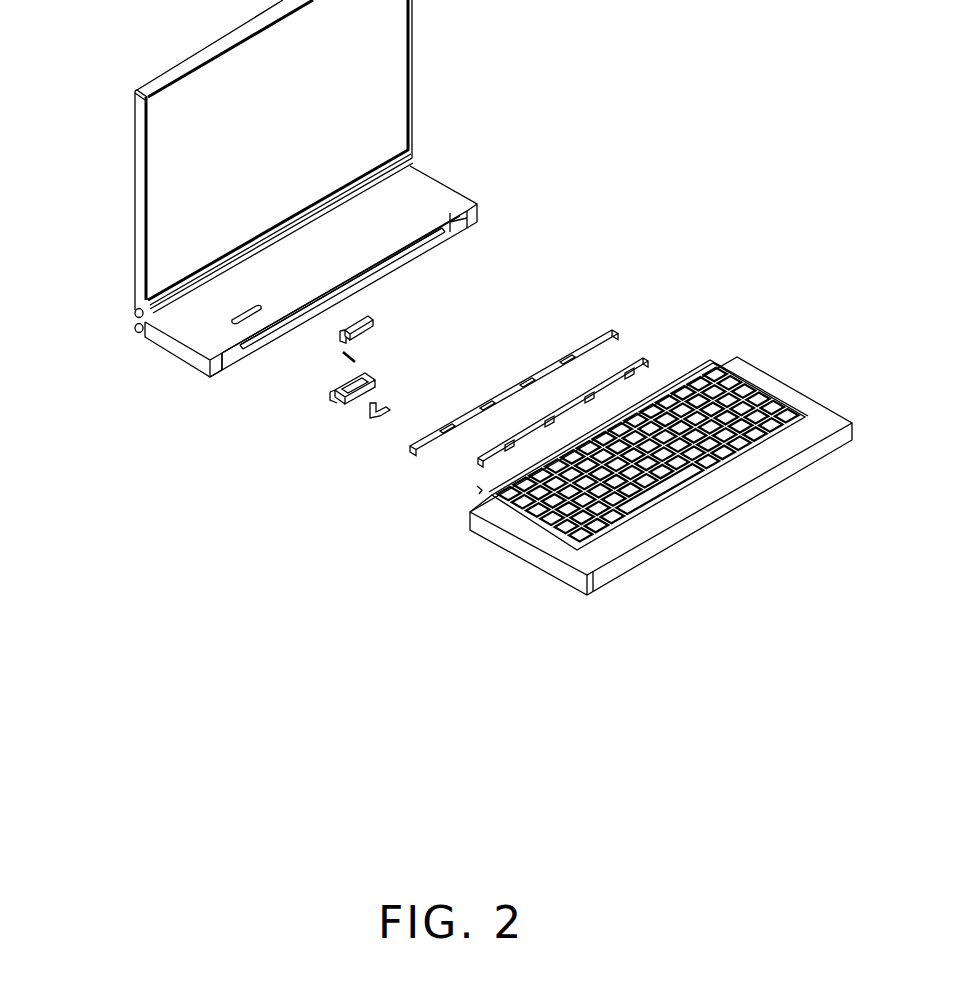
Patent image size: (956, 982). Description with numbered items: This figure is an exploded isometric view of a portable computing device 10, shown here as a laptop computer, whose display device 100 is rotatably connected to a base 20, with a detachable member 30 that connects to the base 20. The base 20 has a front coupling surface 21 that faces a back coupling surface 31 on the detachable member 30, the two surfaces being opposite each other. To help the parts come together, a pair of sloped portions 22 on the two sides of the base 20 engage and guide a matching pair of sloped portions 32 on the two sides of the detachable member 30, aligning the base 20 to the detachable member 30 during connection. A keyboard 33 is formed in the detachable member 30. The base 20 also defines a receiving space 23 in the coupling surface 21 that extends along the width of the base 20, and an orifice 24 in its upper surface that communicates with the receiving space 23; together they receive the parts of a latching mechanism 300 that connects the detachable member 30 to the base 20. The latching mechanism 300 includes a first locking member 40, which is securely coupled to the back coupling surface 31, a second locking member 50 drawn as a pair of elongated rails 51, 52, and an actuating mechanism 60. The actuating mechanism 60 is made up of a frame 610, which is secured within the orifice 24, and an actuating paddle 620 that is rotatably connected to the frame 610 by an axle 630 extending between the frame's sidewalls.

The portable computing device 10 is at (590, 83).
The display device 100 is at (163, 219).
The base 20 is at (428, 197).
The front coupling surface 21 is at (230, 353).
The sloped portions 22 is at (460, 221).
The receiving space 23 is at (282, 324).
The orifice 24 is at (238, 319).
The latching mechanism 300 is at (528, 277).
The detachable member 30 is at (780, 382).
The back coupling surface 31 is at (477, 486).
The sloped portions 32 is at (477, 499).
The keyboard 33 is at (693, 468).
The first locking member 40 is at (647, 365).
The second locking member 50 is at (653, 257).
The first rail 51 is at (610, 323).
The second rail 52 is at (577, 398).
The actuating mechanism 60 is at (463, 283).
The frame 610 is at (372, 378).
The actuating paddle 620 is at (372, 318).
The axle 630 is at (358, 352).